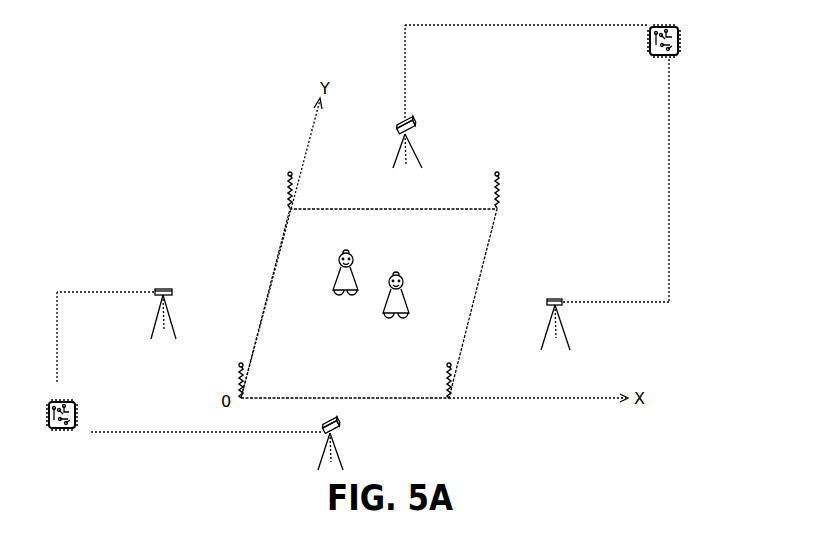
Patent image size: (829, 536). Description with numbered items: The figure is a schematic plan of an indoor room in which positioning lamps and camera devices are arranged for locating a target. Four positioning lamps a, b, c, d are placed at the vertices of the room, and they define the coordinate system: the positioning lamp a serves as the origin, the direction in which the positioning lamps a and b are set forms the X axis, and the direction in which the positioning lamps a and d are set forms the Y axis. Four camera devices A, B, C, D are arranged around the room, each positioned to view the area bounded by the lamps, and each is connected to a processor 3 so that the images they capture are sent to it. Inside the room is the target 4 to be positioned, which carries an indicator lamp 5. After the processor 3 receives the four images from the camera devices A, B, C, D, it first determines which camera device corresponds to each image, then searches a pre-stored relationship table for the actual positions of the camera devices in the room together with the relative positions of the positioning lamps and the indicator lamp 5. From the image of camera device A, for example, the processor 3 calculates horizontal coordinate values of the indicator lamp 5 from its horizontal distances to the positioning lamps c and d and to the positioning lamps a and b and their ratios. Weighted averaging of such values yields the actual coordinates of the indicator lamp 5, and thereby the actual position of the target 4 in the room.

The processor 3 is at (680, 30).
The target to be positioned 4 is at (356, 278).
The indicator lamp 5 is at (352, 252).
The camera device A is at (413, 118).
The camera device B is at (338, 427).
The camera device C is at (167, 288).
The camera device D is at (565, 297).
The positioning lamp a is at (246, 364).
The positioning lamp b is at (454, 362).
The positioning lamp c is at (502, 172).
The positioning lamp d is at (296, 171).